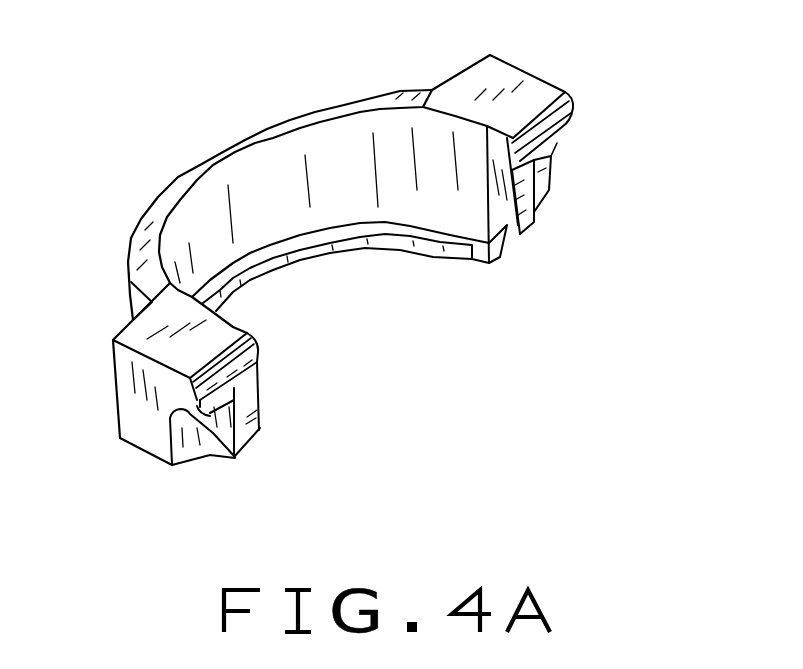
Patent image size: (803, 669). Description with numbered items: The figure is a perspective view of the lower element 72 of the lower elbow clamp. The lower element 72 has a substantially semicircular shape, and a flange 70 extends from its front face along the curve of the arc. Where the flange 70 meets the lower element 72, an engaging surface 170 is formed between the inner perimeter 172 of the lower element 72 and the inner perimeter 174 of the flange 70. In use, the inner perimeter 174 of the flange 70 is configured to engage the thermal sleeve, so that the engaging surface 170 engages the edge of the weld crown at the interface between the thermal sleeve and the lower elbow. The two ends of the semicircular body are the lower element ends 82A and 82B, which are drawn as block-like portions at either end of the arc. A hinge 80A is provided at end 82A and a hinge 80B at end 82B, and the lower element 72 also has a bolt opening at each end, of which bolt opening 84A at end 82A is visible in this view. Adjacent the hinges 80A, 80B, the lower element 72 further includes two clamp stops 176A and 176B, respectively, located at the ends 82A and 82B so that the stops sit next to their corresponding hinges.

The flange 70 is at (342, 243).
The lower element 72 is at (278, 82).
The engaging surface 170 is at (267, 250).
The inner perimeter of lower element 172 is at (362, 137).
The inner perimeter of flange 174 is at (427, 240).
The lower element end 82A is at (157, 417).
The lower element end 82B is at (513, 90).
The hinge 80A is at (237, 360).
The hinge 80B is at (573, 113).
The bolt opening 84A is at (237, 458).
The clamp stop 176A is at (245, 426).
The clamp stop 176B is at (528, 216).